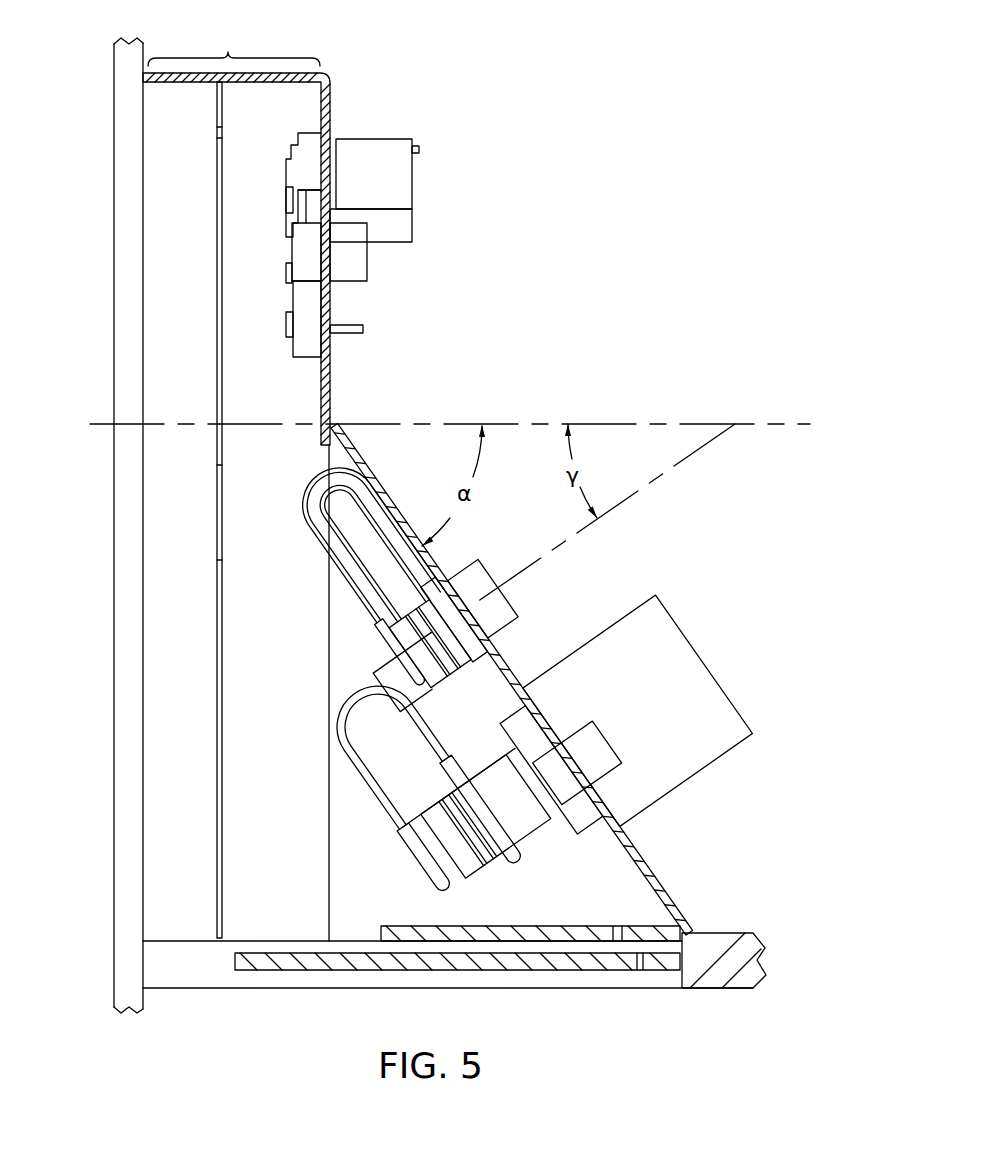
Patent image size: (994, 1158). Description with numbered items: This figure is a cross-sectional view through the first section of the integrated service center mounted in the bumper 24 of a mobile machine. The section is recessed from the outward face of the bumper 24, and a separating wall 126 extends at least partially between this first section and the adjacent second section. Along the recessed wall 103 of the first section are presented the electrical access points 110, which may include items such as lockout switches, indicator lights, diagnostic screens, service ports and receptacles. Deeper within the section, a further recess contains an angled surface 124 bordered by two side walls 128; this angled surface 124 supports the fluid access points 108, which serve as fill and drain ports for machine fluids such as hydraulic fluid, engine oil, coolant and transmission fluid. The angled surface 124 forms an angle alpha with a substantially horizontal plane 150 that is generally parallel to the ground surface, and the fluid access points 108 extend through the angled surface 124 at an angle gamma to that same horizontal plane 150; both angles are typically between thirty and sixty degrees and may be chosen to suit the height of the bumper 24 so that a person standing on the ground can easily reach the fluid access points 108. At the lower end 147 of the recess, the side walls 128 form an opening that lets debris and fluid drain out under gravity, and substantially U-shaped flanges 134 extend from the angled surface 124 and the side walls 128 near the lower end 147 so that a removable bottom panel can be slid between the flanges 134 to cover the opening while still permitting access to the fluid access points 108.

The bumper 24 is at (128, 162).
The separating wall 126 is at (234, 41).
The wall of the first section 103 is at (330, 108).
The electrical access points 110 is at (307, 303).
The substantially horizontal plane 150 is at (445, 424).
The fluid access points 108 is at (492, 623).
The side walls 128 is at (673, 897).
The angled surface 124 is at (613, 887).
The lower end 147 is at (353, 940).
The flanges 134 is at (603, 933).